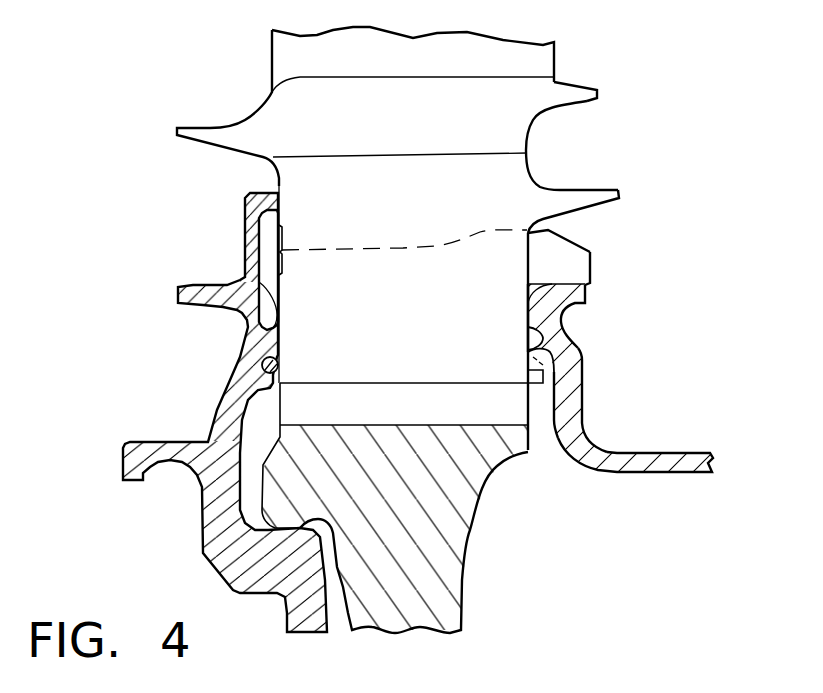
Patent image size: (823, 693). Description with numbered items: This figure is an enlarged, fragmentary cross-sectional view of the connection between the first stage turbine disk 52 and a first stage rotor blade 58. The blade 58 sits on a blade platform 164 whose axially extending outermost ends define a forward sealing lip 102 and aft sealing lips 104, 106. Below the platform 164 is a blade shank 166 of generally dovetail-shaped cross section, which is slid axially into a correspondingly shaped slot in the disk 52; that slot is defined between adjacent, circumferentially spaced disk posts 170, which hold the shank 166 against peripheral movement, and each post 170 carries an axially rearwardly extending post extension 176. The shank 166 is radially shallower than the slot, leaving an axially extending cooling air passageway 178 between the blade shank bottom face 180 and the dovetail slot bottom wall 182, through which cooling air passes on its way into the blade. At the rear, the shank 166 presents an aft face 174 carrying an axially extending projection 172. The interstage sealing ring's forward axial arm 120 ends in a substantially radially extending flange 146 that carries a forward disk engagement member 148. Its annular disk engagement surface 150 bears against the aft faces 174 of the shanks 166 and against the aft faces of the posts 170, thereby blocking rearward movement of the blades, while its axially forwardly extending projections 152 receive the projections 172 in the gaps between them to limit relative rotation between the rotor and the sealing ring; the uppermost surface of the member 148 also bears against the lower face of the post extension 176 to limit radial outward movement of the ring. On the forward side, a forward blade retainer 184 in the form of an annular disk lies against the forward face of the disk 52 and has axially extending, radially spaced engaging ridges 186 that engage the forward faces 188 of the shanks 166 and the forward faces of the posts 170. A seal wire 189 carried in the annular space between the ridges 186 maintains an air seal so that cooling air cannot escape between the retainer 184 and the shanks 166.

The first stage disk 52 is at (420, 607).
The first stage rotor blade 58 is at (378, 61).
The forward sealing lip 102 is at (186, 131).
The aft sealing lip 104 is at (598, 89).
The aft sealing lip 106 is at (608, 193).
The forward axial arm 120 is at (693, 457).
The radially-extending flange 146 is at (573, 368).
The forward disk engagement member 148 is at (570, 295).
The disk engagement surface 150 is at (527, 323).
The axial projection 152 is at (528, 350).
The blade platform 164 is at (430, 95).
The blade shank 166 is at (492, 173).
The disk post 170 is at (387, 272).
The axially-extending projection 172 is at (528, 393).
The aft face 174 is at (533, 252).
The post extension 176 is at (567, 267).
The cooling air passageway 178 is at (363, 393).
The blade shank bottom face 180 is at (357, 383).
The dovetail slot bottom wall 182 is at (450, 425).
The forward blade retainer 184 is at (213, 517).
The engaging ridge 186 is at (280, 325).
The forward face 188 is at (259, 282).
The seal wire 189 is at (277, 362).